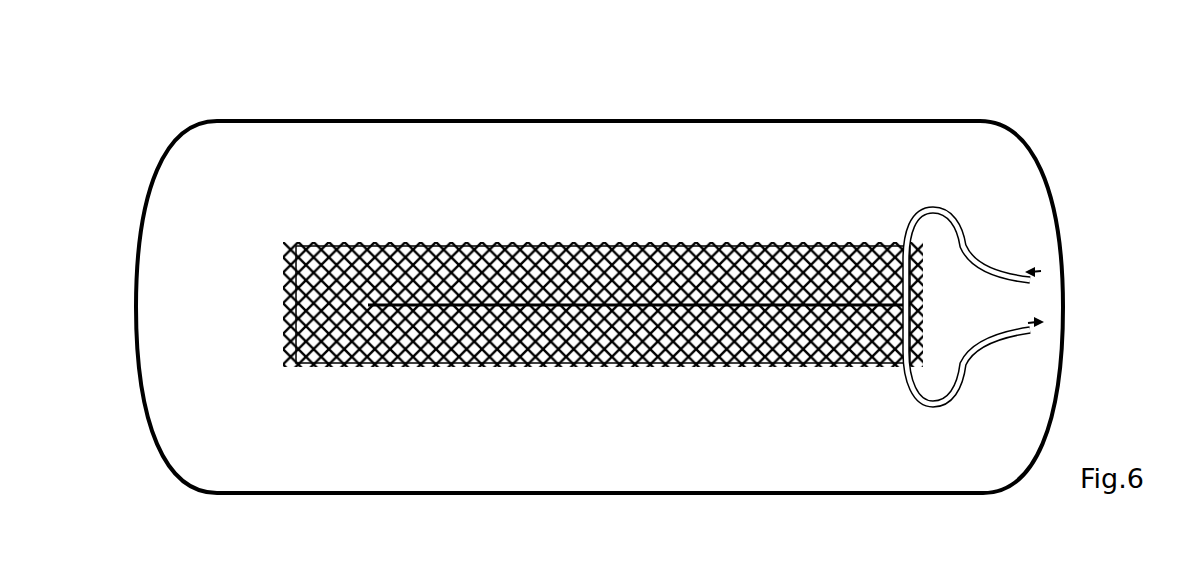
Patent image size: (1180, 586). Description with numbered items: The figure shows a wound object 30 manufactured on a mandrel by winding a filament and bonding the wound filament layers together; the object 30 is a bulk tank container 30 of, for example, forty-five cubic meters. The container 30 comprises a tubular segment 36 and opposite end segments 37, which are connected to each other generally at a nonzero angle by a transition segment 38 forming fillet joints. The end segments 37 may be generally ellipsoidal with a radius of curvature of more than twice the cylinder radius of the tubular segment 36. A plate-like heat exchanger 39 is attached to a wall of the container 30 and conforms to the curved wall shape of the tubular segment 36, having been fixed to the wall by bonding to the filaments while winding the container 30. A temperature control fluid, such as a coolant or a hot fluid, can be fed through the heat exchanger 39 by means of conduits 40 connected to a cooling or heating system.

The bulk tank container 30 is at (1057, 128).
The tubular segment 36 is at (763, 121).
The end segments 37 is at (1047, 185).
The transition segment 38 is at (1005, 122).
The heat exchanger 39 is at (585, 242).
The conduits 40 is at (970, 246).